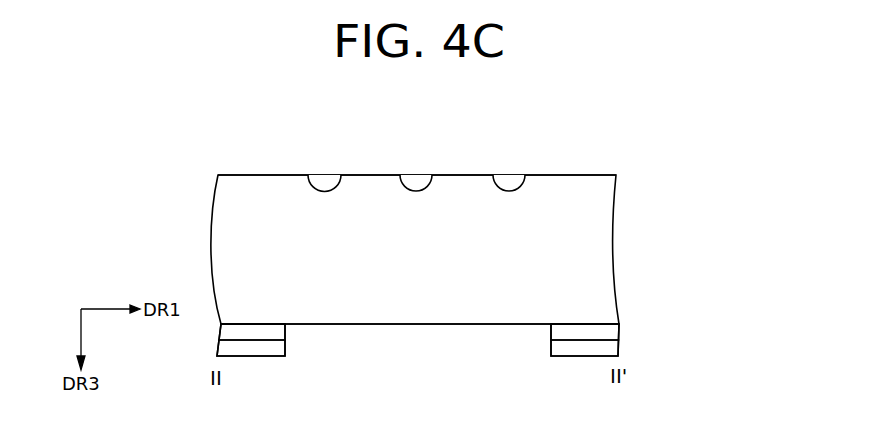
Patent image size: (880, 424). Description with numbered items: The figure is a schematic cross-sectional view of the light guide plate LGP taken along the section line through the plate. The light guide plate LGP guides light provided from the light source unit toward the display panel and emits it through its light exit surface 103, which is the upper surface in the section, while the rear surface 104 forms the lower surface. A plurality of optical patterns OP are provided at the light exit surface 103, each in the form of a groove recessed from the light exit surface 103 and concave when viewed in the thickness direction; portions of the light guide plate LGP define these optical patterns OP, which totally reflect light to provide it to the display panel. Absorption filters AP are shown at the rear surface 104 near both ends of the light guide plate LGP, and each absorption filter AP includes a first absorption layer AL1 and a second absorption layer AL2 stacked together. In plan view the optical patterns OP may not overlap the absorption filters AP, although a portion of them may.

The light guide plate LGP is at (602, 252).
The light exit surface 103 is at (597, 175).
The optical pattern OP is at (326, 176).
The rear surface 104 is at (420, 326).
The absorption filter AP is at (703, 322).
The first absorption layer AL1 is at (610, 332).
The second absorption layer AL2 is at (610, 348).